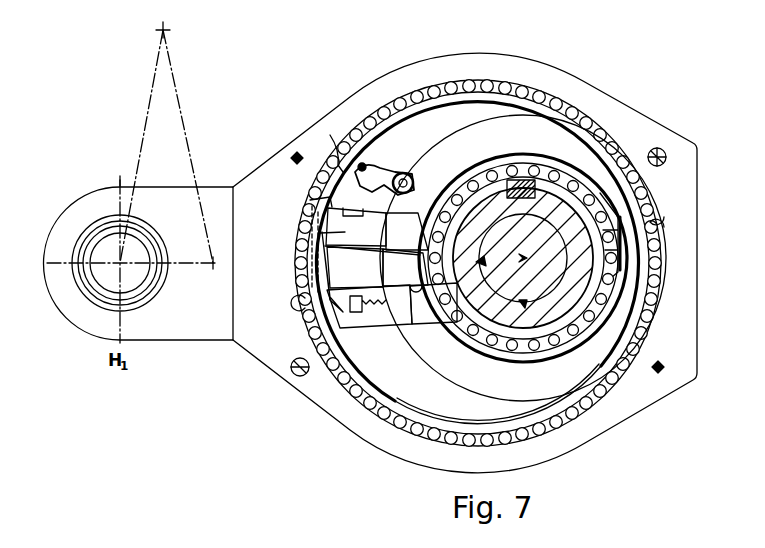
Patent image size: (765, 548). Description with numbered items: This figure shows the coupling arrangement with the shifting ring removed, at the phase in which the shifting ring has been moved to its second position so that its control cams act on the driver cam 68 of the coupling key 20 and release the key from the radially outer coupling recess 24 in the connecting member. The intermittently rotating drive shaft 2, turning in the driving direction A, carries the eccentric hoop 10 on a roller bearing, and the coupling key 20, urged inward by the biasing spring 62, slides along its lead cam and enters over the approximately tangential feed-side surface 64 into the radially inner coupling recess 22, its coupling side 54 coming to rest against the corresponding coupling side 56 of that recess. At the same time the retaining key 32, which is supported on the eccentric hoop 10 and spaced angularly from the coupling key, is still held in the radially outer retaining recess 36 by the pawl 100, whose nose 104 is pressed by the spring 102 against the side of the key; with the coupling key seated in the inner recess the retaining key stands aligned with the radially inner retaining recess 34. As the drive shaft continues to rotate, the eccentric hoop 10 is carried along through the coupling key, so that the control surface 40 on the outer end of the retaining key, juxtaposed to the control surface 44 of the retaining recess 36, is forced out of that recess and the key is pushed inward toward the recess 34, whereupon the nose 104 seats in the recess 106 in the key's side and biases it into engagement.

The eccentric hoop 10 is at (450, 112).
The drive shaft 2 is at (583, 283).
The coupling key 20 is at (385, 318).
The coupling recess 22 is at (455, 300).
The coupling recess 24 is at (296, 306).
The retaining key 32 is at (345, 232).
The retaining recess 34 is at (407, 231).
The retaining recess 36 is at (307, 203).
The control surface 40 is at (318, 235).
The control surface 44 is at (310, 212).
The coupling side 54 is at (410, 288).
The coupling side 56 is at (520, 207).
The biasing spring 62 is at (360, 312).
The feed-side surface 64 is at (467, 330).
The driver cam 68 is at (360, 298).
The pawl 100 is at (392, 172).
The spring 102 is at (324, 144).
The nose 104 is at (414, 179).
The recess 106 is at (357, 227).
The driving direction A is at (518, 305).